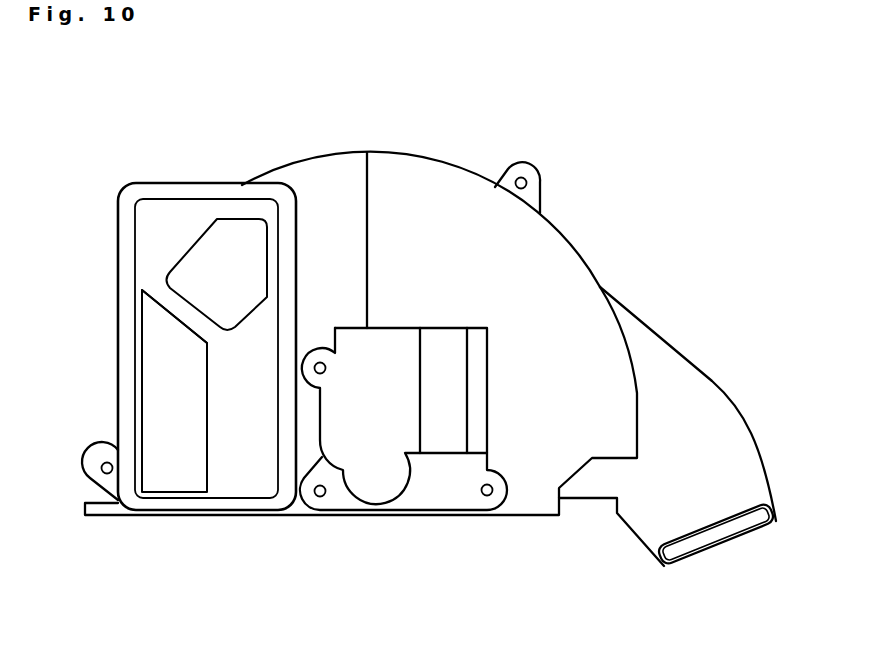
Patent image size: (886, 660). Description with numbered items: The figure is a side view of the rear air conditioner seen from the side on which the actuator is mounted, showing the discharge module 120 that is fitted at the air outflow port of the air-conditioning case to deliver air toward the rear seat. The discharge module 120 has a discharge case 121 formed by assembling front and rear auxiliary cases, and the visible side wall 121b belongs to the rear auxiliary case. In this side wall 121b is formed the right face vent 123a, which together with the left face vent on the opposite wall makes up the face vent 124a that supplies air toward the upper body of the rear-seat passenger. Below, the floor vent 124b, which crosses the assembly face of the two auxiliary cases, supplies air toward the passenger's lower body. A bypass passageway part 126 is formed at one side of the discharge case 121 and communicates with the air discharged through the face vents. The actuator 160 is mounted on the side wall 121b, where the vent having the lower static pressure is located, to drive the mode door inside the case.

The discharge module 120 is at (410, 153).
The discharge case 121 is at (462, 173).
The side wall 121b is at (333, 208).
The right face vent 123a is at (226, 258).
The face vent 124a is at (163, 122).
The floor vent 124b is at (712, 528).
The bypass passageway part 126 is at (167, 445).
The actuator 160 is at (373, 478).